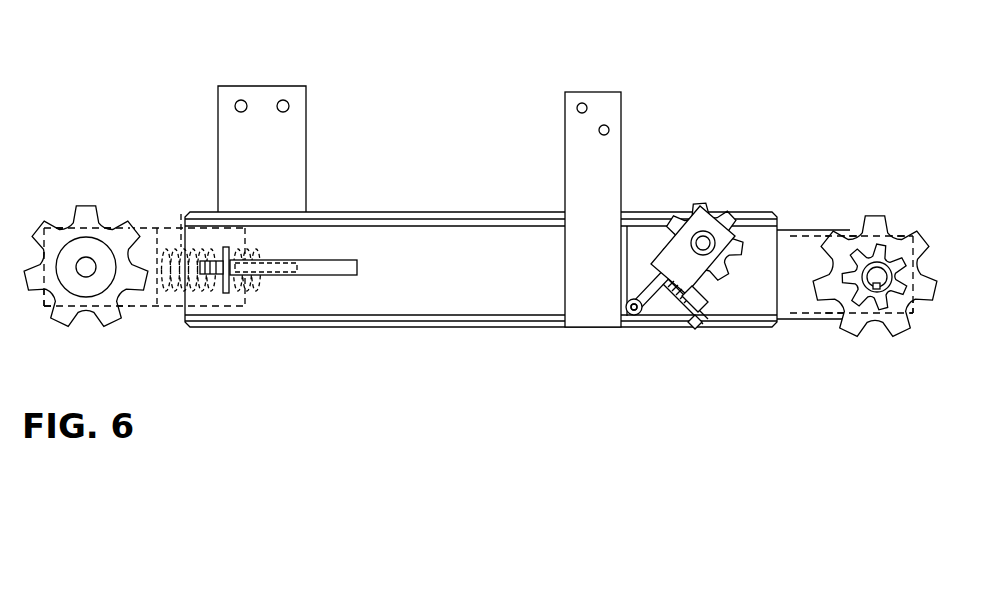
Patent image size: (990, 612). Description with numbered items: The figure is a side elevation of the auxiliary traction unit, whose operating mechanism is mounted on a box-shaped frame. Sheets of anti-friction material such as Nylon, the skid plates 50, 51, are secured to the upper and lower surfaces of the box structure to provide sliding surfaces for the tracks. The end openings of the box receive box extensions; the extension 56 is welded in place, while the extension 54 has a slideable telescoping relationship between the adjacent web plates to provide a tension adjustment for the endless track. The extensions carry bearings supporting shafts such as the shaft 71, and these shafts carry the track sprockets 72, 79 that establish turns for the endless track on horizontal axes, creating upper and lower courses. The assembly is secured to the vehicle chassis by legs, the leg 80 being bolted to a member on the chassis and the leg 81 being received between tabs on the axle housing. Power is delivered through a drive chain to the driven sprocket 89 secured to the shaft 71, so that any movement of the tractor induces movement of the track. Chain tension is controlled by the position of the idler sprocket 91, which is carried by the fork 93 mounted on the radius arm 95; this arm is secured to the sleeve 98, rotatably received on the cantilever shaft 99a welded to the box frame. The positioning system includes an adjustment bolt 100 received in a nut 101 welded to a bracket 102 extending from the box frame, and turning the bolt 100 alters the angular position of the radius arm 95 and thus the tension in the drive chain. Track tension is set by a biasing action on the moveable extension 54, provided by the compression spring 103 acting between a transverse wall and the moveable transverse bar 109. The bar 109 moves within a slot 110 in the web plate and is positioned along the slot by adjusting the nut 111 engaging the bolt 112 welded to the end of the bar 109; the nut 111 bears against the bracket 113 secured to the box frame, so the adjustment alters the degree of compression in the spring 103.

The skid plate 50 is at (442, 212).
The skid plate 51 is at (453, 327).
The box extension 54 is at (122, 318).
The box extension 56 is at (800, 320).
The shaft 71 is at (880, 277).
The track sprocket 72 is at (86, 205).
The track sprocket 79 is at (888, 233).
The leg 80 is at (621, 140).
The leg 81 is at (306, 130).
The driven sprocket 89 is at (895, 298).
The idler sprocket 91 is at (702, 205).
The fork 93 is at (662, 252).
The radius arm 95 is at (655, 298).
The sleeve 98 is at (634, 316).
The cantilever shaft 99a is at (628, 305).
The adjustment bolt 100 is at (698, 328).
The nut 101 is at (683, 311).
The bracket 102 is at (706, 300).
The compression spring 103 is at (181, 213).
The transverse bar 109 is at (276, 274).
The slot 110 is at (330, 276).
The nut 111 is at (227, 295).
The bolt 112 is at (208, 276).
The bracket 113 is at (226, 247).